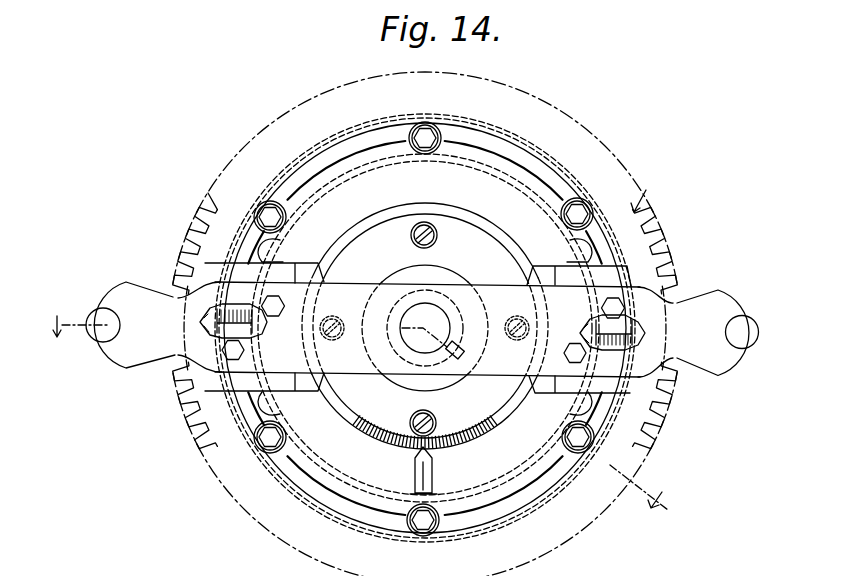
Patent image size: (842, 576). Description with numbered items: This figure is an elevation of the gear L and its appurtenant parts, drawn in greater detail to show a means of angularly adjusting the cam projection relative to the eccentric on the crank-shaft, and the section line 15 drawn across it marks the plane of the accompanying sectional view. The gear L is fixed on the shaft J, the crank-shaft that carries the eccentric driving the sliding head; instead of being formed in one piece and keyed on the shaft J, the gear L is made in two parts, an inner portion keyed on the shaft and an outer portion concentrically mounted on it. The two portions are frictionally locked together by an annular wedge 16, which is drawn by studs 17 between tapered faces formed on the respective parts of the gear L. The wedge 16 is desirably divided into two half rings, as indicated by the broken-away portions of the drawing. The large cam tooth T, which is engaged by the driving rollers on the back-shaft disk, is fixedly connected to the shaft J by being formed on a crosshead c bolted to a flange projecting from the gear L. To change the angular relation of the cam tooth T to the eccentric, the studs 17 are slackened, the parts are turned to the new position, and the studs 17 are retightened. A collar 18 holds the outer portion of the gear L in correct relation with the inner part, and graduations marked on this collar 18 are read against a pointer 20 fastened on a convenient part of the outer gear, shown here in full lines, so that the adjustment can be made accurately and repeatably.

The section line 15 is at (410, 453).
The annular wedge 16 is at (228, 308).
The studs 17 is at (430, 133).
The collar 18 is at (425, 326).
The pointer 20 is at (428, 472).
The gear L is at (210, 197).
The cam tooth T is at (139, 272).
The shaft J is at (428, 313).
The crosshead c is at (474, 357).